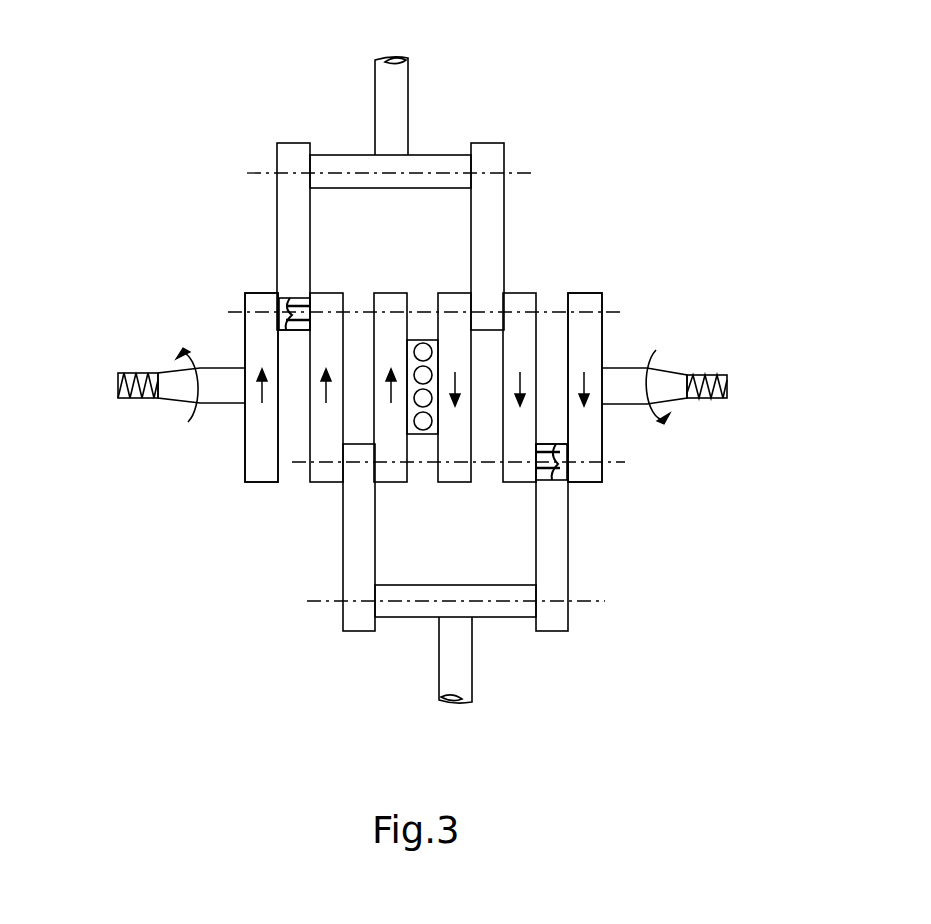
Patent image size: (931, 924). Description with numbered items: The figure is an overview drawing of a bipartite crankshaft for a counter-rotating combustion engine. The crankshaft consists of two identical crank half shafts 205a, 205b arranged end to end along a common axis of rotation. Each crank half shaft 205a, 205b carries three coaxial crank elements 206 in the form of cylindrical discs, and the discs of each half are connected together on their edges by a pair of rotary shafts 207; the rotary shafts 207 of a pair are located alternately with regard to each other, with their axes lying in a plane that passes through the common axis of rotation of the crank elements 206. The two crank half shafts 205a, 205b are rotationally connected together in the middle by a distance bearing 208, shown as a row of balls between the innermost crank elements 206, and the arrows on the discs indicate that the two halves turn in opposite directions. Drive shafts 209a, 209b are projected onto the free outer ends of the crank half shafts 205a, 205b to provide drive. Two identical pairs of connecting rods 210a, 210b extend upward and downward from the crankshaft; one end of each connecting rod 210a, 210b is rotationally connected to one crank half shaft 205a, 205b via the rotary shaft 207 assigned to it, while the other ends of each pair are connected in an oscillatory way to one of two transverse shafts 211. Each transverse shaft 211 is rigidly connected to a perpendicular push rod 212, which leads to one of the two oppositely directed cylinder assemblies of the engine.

The crank half shaft 205a is at (232, 454).
The crank half shaft 205b is at (622, 454).
The crank element 206 is at (257, 340).
The rotary shaft 207 is at (293, 305).
The distance bearing 208 is at (425, 373).
The drive shaft 209a is at (178, 377).
The drive shaft 209b is at (670, 380).
The connecting rod 210a is at (295, 237).
The connecting rod 210b is at (493, 230).
The transverse shaft 211 is at (363, 163).
The push rod 212 is at (397, 125).